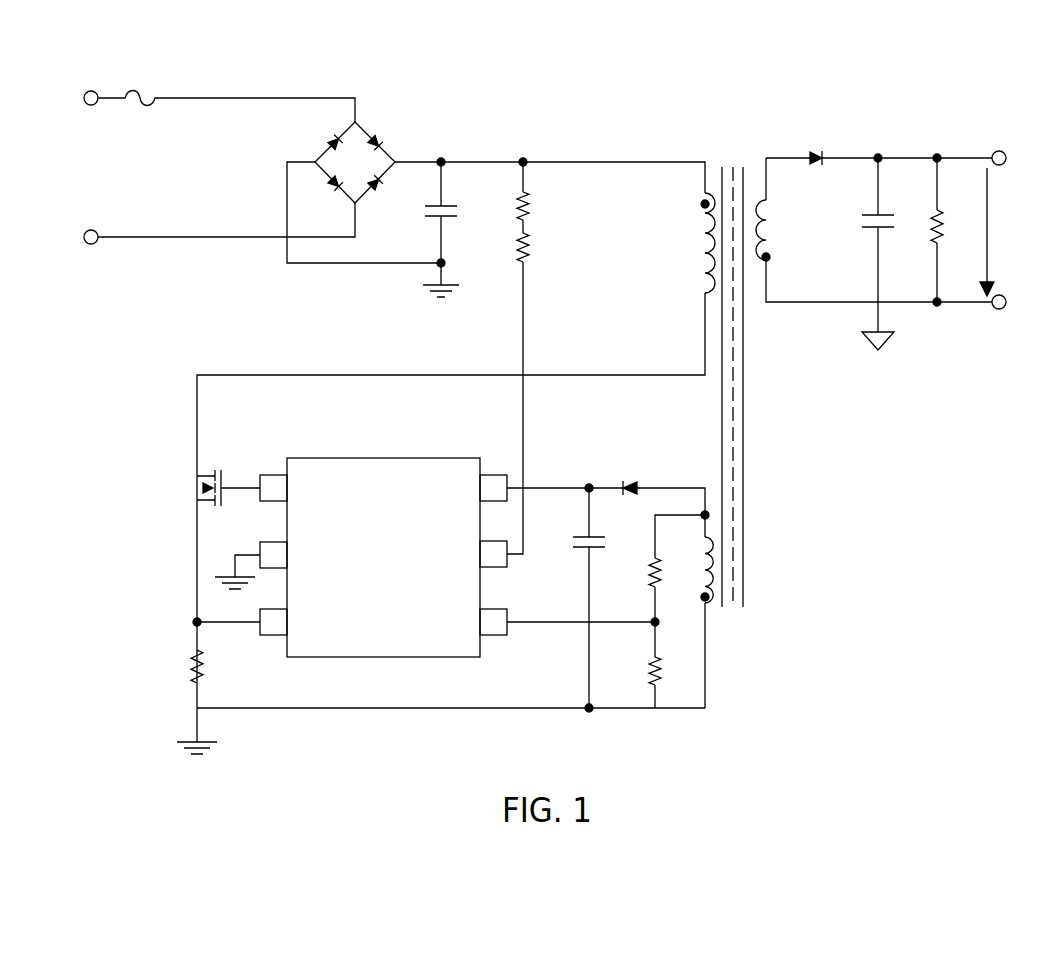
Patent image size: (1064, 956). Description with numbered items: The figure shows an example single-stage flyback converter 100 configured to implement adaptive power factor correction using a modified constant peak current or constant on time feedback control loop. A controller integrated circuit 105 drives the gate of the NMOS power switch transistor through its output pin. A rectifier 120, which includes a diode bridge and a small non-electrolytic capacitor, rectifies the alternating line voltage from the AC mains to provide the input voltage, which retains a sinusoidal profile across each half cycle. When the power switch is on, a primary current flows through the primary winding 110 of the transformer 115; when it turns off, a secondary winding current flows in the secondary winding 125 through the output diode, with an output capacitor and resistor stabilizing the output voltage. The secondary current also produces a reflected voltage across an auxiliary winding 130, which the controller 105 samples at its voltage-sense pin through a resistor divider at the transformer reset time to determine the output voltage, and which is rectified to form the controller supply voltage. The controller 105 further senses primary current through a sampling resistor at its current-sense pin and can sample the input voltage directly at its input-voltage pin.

The single-stage flyback converter 100 is at (578, 43).
The controller integrated circuit 105 is at (381, 458).
The primary winding 110 is at (705, 243).
The transformer 115 is at (753, 132).
The rectifier 120 is at (407, 128).
The secondary winding 125 is at (768, 206).
The auxiliary winding 130 is at (708, 605).